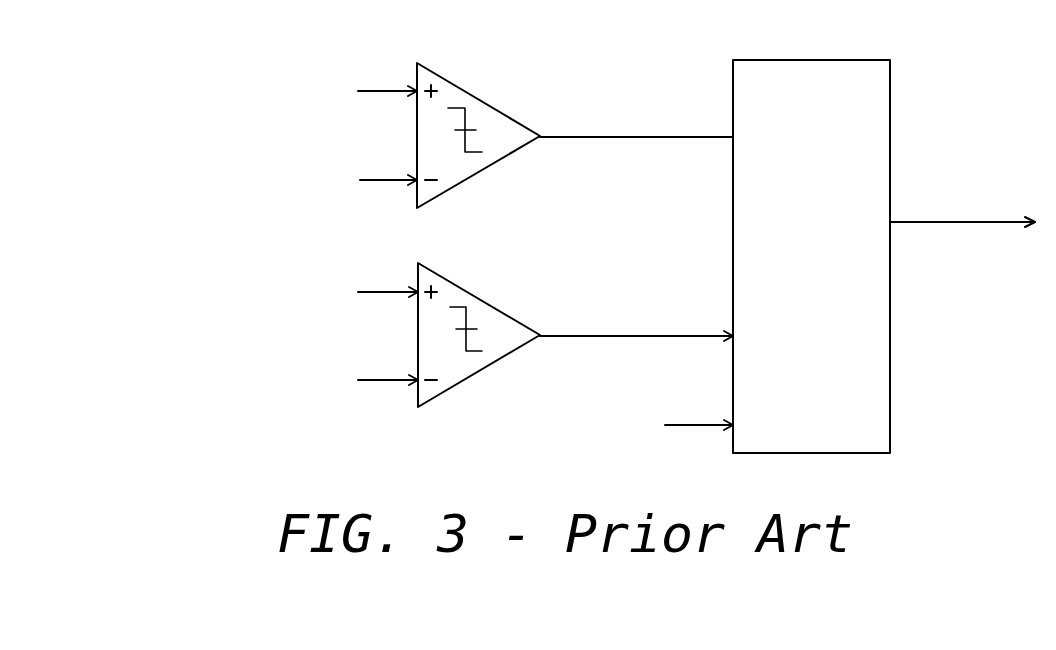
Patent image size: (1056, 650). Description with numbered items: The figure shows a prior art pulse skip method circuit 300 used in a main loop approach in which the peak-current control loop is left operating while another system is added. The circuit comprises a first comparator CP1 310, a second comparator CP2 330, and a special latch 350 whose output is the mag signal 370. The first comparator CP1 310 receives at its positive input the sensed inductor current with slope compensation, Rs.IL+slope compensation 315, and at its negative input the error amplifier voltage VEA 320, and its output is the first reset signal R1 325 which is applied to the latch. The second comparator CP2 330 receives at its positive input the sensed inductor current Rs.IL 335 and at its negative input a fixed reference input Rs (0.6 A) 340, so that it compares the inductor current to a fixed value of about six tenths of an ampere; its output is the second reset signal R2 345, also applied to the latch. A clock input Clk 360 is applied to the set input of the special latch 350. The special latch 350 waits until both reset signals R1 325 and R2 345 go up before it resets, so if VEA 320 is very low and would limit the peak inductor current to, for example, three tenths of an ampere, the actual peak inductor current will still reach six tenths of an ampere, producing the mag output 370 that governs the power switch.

The prior art comparator / latch control circuit 300 is at (153, 197).
The first comparator CP1 310 is at (492, 165).
The Rs.IL+slope compensation input 315 is at (321, 67).
The VEA input 320 is at (319, 187).
The reset signal R1 325 is at (695, 135).
The second comparator CP2 330 is at (492, 365).
The Rs.IL input 335 is at (325, 272).
The Rs (0.6A) reference input 340 is at (316, 360).
The reset signal R2 345 is at (694, 334).
The special latch 350 is at (846, 59).
The clock input Clk 360 is at (694, 424).
The mag output 370 is at (926, 221).